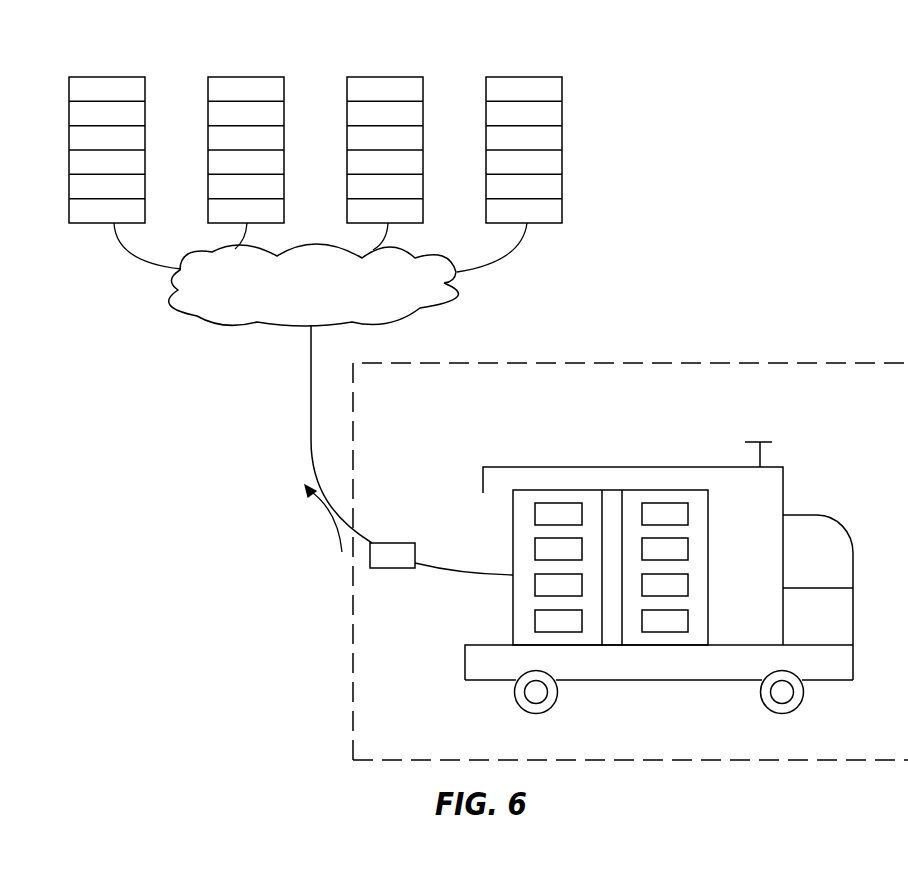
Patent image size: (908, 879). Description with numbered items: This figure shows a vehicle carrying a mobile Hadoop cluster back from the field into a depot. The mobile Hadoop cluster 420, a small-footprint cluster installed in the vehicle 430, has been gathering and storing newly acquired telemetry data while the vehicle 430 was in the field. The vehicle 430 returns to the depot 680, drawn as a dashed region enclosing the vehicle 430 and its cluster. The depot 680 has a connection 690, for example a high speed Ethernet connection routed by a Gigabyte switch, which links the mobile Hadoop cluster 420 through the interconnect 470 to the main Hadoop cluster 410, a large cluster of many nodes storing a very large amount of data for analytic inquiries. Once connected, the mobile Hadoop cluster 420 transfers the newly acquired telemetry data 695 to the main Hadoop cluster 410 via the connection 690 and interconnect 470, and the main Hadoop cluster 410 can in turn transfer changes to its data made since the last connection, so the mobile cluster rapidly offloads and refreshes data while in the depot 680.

The main Hadoop cluster 410 is at (308, 157).
The interconnect 470 is at (314, 285).
The depot 680 is at (630, 561).
The connection 690 is at (441, 559).
The newly acquired telemetry data 695 is at (310, 518).
The vehicle 430 is at (659, 578).
The mobile Hadoop cluster 420 is at (610, 557).